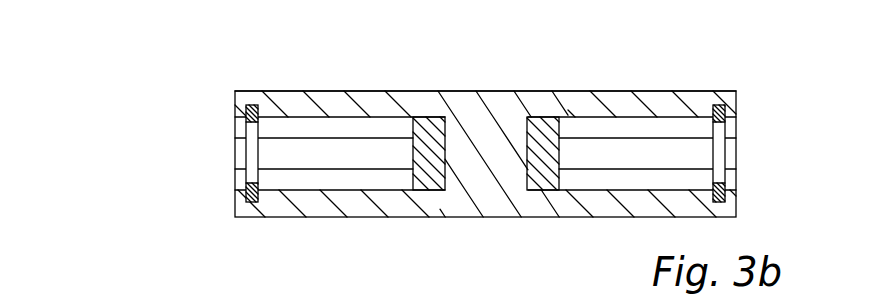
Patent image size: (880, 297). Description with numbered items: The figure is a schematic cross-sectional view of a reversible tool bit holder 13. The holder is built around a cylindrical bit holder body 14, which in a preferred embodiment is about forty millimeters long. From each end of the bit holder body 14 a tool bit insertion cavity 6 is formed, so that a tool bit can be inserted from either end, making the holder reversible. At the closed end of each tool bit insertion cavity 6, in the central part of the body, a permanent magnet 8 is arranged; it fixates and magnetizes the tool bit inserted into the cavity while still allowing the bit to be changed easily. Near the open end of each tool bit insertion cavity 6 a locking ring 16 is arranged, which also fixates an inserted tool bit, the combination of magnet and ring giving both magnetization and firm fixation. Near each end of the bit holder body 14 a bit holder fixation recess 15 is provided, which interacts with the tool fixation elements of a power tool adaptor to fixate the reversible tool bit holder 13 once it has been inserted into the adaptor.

The reversible tool bit holder 13 is at (451, 155).
The tool bit insertion cavity 6 is at (280, 163).
The permanent magnet 8 is at (430, 132).
The bit holder body 14 is at (470, 192).
The bit holder fixation recess 15 is at (303, 88).
The locking ring 16 is at (253, 165).